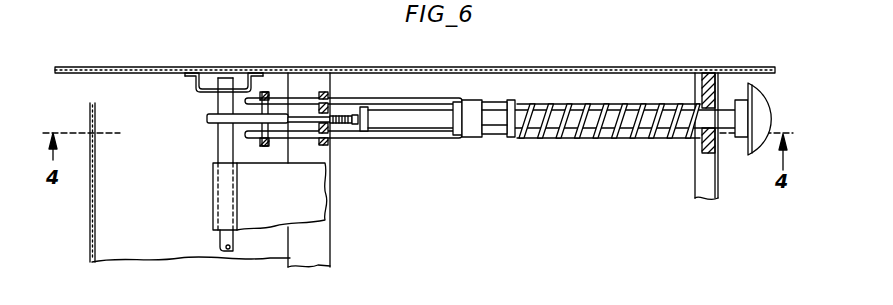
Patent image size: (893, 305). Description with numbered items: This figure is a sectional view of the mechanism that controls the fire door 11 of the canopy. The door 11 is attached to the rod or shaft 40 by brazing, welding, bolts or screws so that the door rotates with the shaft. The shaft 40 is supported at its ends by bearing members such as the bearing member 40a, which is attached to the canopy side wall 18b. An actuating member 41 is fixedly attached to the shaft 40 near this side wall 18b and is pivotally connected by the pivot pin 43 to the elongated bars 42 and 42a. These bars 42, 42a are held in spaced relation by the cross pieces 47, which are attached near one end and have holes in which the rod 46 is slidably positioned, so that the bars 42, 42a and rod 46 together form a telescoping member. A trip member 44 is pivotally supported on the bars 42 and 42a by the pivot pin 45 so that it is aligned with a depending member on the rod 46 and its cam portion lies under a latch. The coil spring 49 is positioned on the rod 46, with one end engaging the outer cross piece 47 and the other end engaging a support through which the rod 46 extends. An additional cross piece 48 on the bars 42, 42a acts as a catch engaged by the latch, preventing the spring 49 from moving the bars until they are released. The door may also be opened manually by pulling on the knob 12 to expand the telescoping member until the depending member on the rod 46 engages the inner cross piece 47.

The canopy side wall 18b is at (153, 67).
The bearing member 40a is at (208, 78).
The rod or shaft 40 is at (222, 241).
The fire door 11 is at (243, 200).
The actuating member 41 is at (208, 122).
The elongated member or bar 42 is at (346, 140).
The elongated member or bar 42a is at (341, 103).
The pivot pin 43 is at (268, 92).
The trip member 44 is at (307, 117).
The pivot pin 45 is at (325, 92).
The rod 46 is at (413, 115).
The cross pieces 47 is at (462, 108).
The cross piece or catch 48 is at (475, 107).
The coil spring 49 is at (573, 110).
The knob 12 is at (757, 108).